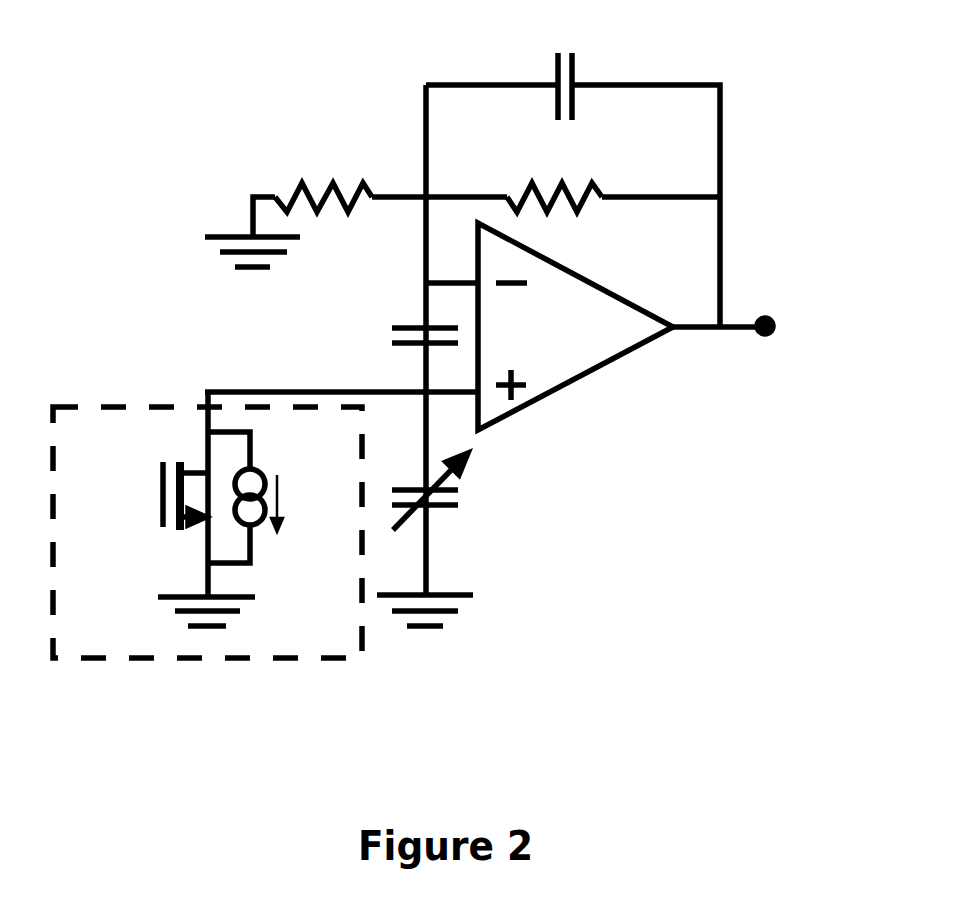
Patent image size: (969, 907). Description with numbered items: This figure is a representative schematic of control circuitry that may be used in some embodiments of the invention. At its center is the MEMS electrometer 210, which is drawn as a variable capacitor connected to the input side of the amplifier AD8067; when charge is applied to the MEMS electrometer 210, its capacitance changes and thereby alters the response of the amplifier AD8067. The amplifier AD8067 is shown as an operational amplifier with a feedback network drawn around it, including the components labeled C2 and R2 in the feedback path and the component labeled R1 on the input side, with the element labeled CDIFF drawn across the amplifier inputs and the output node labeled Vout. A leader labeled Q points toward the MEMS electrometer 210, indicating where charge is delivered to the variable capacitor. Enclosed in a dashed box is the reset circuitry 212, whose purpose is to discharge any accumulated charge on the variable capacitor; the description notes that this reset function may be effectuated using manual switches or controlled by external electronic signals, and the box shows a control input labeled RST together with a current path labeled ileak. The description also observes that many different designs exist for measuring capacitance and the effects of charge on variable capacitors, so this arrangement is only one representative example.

The MEMS electrometer 210 is at (458, 505).
The reset circuitry 212 is at (207, 525).
The feedback capacitor C2 is at (563, 68).
The input resistor R1 is at (323, 176).
The feedback resistor R2 is at (554, 178).
The amplifier AD8067 is at (439, 326).
The output voltage node Vout is at (762, 347).
The differential input capacitor CDIFF is at (382, 334).
The charge transfer path Q is at (410, 462).
The reset transistor RST is at (163, 495).
The leakage current source ileak is at (302, 503).